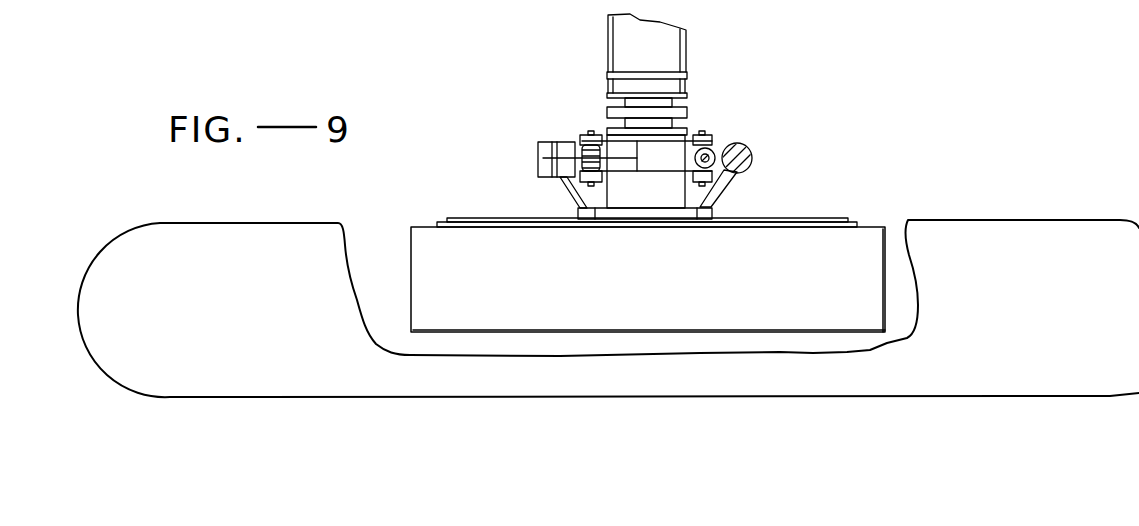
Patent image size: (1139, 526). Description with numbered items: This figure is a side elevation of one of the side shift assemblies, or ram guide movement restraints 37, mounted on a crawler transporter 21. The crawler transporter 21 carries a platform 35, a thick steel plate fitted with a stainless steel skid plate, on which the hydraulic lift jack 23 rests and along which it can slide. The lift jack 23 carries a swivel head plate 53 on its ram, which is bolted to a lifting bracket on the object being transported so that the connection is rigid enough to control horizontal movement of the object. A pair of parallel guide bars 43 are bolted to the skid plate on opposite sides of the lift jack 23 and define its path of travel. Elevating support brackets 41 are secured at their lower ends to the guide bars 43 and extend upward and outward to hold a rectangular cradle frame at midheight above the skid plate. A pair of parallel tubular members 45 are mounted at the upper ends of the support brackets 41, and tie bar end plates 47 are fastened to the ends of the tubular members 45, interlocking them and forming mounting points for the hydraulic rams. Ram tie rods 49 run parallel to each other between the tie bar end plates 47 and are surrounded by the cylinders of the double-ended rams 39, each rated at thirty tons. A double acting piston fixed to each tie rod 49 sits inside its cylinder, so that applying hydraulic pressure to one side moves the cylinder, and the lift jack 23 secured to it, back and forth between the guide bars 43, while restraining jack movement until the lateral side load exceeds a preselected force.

The crawler transporter 21 is at (1027, 196).
The lift jack 23 is at (690, 127).
The platform 35 is at (503, 218).
The ram guide movement restraint 37 is at (536, 140).
The ram 39 is at (714, 142).
The elevating support bracket 41 is at (733, 179).
The guide bar 43 is at (717, 208).
The tubular member 45 is at (753, 157).
The tie bar end plate 47 is at (542, 152).
The ram tie rod 49 is at (696, 160).
The swivel head plate 53 is at (687, 110).